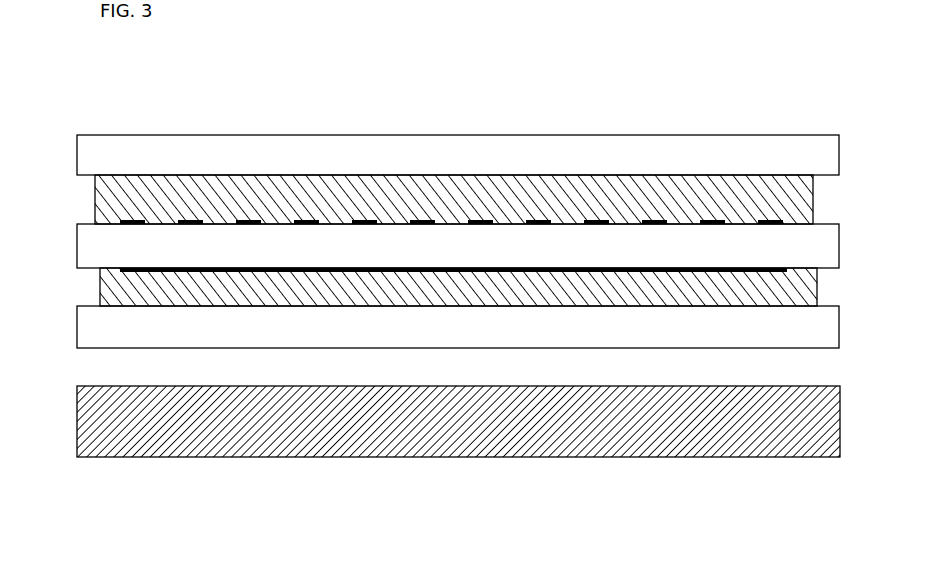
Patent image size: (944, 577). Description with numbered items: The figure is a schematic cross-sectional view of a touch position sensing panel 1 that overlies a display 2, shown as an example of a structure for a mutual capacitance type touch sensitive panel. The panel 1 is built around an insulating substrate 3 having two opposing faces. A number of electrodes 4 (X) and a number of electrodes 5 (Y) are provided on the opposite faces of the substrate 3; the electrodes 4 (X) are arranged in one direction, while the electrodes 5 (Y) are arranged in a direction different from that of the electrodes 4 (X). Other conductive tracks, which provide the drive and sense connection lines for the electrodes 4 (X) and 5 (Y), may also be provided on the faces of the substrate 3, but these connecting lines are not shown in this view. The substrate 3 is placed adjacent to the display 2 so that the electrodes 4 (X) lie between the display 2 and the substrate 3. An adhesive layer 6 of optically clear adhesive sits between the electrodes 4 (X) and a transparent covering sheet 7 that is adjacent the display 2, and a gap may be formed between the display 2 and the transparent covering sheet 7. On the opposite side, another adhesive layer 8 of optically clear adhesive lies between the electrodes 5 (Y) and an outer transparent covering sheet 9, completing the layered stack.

The touch position sensing panel 1 is at (690, 108).
The display 2 is at (545, 458).
The insulating substrate 3 is at (458, 246).
The electrodes (X) 4 is at (120, 271).
The electrodes (Y) 5 is at (777, 220).
The adhesive layer 6 is at (458, 287).
The transparent covering sheet 7 is at (458, 327).
The adhesive layer 8 is at (454, 199).
The transparent covering sheet 9 is at (458, 155).